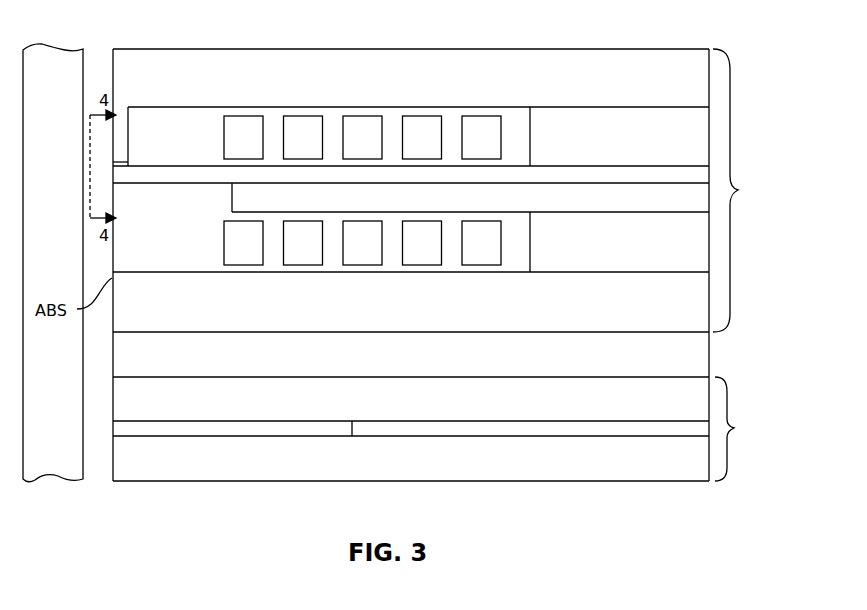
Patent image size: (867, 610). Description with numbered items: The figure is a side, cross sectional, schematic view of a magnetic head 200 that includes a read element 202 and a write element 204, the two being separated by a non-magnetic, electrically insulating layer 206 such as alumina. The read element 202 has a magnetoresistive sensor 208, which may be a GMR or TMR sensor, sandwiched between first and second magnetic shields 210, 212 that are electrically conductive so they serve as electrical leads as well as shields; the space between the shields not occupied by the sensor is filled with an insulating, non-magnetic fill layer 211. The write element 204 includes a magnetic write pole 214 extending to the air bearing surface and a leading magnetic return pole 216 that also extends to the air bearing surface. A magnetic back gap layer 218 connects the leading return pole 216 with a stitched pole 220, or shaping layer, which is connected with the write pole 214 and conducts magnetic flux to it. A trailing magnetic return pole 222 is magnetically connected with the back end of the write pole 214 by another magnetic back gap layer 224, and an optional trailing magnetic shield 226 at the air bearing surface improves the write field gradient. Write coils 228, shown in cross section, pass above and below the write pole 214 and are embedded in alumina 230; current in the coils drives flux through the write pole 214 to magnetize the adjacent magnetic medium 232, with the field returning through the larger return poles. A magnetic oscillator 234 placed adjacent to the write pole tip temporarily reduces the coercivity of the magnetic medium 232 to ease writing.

The magnetic head 200 is at (433, 49).
The read element 202 is at (743, 422).
The write element 204 is at (744, 187).
The non-magnetic, electrically insulating layer 206 is at (436, 355).
The magnetoresistive sensor 208 is at (250, 430).
The first magnetic shield 210 is at (434, 459).
The fill layer 211 is at (460, 427).
The second magnetic shield 212 is at (432, 396).
The magnetic write pole 214 is at (143, 176).
The leading magnetic return pole 216 is at (437, 304).
The magnetic back gap layer 218 is at (642, 241).
The stitched pole 220 is at (435, 199).
The trailing magnetic return pole 222 is at (377, 78).
The magnetic back gap layer 224 is at (649, 139).
The trailing magnetic shield 226 is at (122, 135).
The write coil 228 is at (433, 125).
The alumina fill material 230 is at (203, 131).
The magnetic medium 232 is at (53, 70).
The magnetic oscillator 234 is at (125, 163).